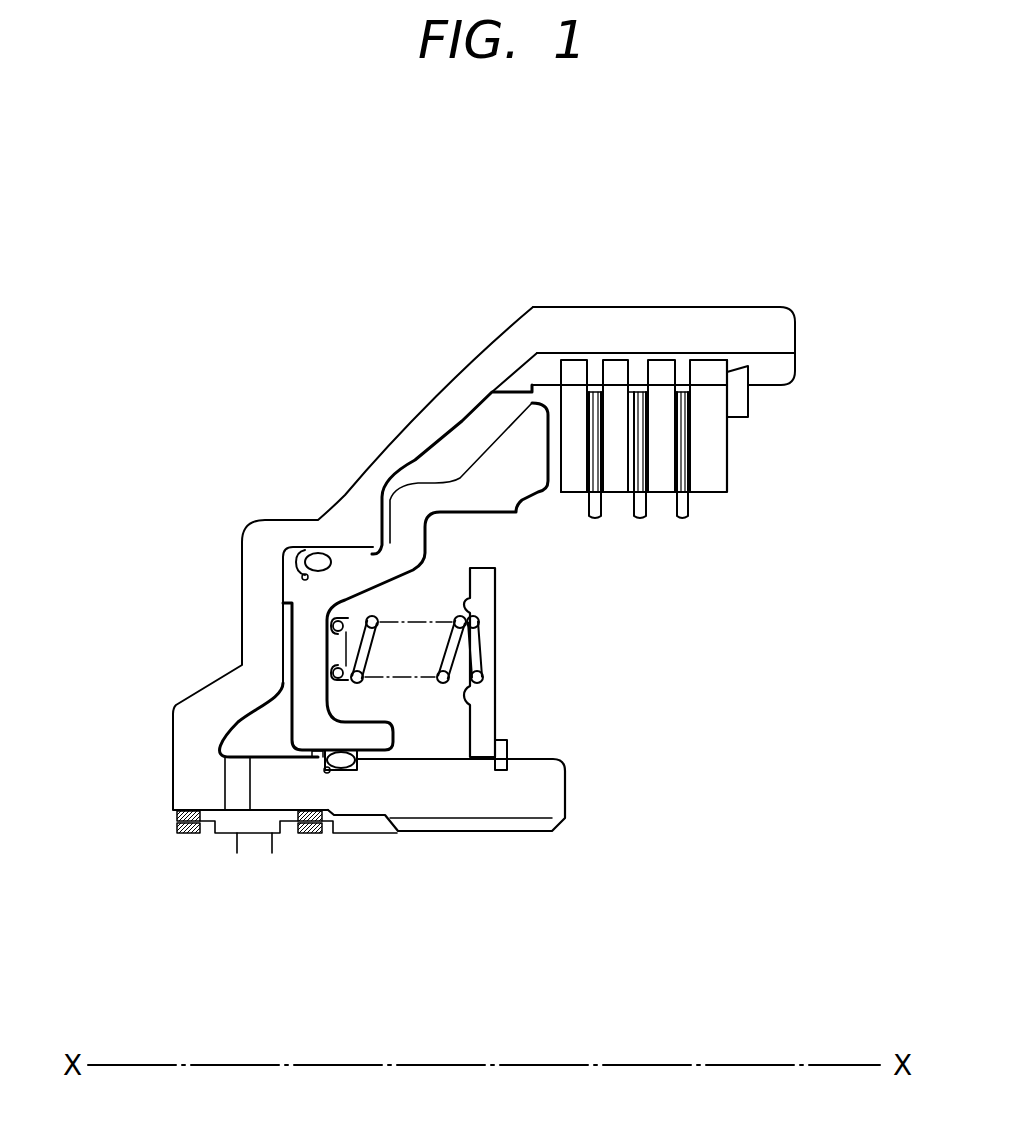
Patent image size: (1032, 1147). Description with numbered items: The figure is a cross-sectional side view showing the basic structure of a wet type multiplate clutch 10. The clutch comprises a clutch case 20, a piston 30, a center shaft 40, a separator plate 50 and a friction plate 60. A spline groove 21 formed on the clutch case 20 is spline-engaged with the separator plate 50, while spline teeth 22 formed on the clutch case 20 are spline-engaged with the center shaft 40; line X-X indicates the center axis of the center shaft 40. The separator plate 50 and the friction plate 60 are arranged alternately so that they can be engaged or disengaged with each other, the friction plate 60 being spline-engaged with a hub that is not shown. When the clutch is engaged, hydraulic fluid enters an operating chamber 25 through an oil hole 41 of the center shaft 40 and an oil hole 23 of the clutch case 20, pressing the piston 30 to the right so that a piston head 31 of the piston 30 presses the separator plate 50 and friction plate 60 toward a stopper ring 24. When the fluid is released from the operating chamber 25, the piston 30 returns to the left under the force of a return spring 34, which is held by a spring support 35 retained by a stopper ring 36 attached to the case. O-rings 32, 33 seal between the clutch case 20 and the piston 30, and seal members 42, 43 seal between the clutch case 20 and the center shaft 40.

The wet type multiplate clutch 10 is at (461, 550).
The clutch case 20 is at (517, 323).
The spline groove 21 is at (783, 360).
The spline teeth 22 is at (512, 825).
The oil hole 23 is at (235, 765).
The stopper ring 24 is at (738, 403).
The operating chamber 25 is at (240, 745).
The piston 30 is at (498, 473).
The piston head 31 is at (539, 415).
The O-ring 32 is at (320, 557).
The O-ring 33 is at (333, 761).
The return spring 34 is at (465, 692).
The spring support 35 is at (485, 587).
The stopper ring 36 is at (507, 743).
The center shaft 40 is at (222, 845).
The oil hole 41 is at (255, 848).
The seal member 42 is at (176, 827).
The seal member 43 is at (305, 838).
The separator plate 50 is at (718, 473).
The friction plate 60 is at (690, 510).